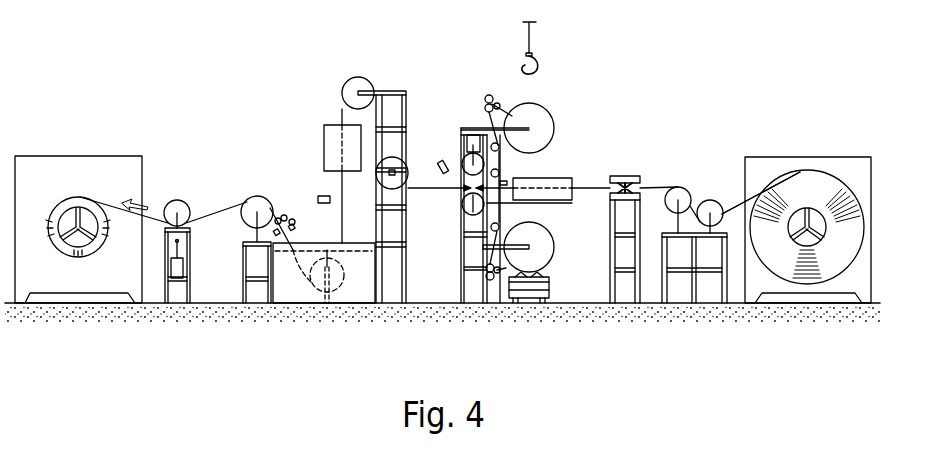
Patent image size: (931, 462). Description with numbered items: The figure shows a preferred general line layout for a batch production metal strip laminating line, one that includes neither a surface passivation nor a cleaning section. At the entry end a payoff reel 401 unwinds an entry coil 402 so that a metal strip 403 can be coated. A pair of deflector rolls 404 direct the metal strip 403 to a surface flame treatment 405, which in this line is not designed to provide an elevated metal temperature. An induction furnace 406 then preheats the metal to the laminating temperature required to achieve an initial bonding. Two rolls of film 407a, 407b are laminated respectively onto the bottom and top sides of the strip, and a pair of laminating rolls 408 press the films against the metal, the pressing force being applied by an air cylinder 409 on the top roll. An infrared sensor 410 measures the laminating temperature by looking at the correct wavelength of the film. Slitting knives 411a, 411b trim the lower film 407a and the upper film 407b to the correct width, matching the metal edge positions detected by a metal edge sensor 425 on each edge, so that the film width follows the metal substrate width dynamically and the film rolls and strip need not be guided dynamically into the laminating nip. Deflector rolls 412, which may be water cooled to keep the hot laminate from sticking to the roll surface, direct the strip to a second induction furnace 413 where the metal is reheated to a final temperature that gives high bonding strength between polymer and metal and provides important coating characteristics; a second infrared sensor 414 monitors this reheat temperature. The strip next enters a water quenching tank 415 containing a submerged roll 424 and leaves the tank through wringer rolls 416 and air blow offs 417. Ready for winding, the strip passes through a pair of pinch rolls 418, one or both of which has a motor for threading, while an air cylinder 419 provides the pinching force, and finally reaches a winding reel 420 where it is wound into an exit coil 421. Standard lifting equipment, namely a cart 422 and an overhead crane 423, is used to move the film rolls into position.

The payoff reel 401 is at (818, 157).
The entry coil 402 is at (838, 175).
The metal strip 403 is at (736, 200).
The deflector rolls 404 is at (708, 199).
The surface flame treatment 405 is at (628, 176).
The induction furnace 406 is at (550, 178).
The lower film roll 407a is at (552, 241).
The upper film roll 407b is at (552, 121).
The laminating rolls 408 is at (470, 207).
The air cylinder 409 is at (467, 151).
The infrared sensor 410 is at (439, 159).
The slitting knives 411a is at (486, 268).
The slitting knives 411b is at (486, 97).
The deflector rolls 412 is at (358, 77).
The second induction furnace 413 is at (324, 125).
The second infrared sensor 414 is at (318, 196).
The water quenching tank 415 is at (355, 243).
The wringer rolls 416 is at (275, 214).
The air blow offs 417 is at (295, 220).
The pinch rolls 418 is at (178, 200).
The air cylinder 419 is at (180, 270).
The winding reel 420 is at (83, 156).
The exit coil 421 is at (78, 196).
The cart 422 is at (551, 288).
The overhead crane 423 is at (539, 64).
The submerged roll 424 is at (327, 262).
The metal edge sensor 425 is at (506, 180).